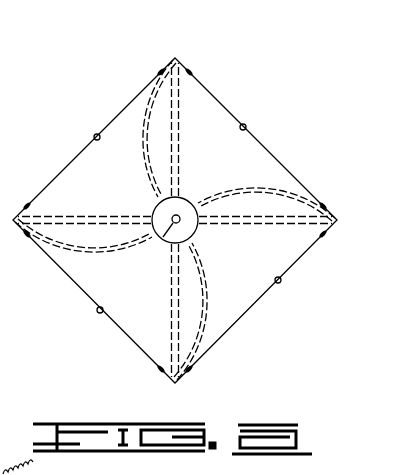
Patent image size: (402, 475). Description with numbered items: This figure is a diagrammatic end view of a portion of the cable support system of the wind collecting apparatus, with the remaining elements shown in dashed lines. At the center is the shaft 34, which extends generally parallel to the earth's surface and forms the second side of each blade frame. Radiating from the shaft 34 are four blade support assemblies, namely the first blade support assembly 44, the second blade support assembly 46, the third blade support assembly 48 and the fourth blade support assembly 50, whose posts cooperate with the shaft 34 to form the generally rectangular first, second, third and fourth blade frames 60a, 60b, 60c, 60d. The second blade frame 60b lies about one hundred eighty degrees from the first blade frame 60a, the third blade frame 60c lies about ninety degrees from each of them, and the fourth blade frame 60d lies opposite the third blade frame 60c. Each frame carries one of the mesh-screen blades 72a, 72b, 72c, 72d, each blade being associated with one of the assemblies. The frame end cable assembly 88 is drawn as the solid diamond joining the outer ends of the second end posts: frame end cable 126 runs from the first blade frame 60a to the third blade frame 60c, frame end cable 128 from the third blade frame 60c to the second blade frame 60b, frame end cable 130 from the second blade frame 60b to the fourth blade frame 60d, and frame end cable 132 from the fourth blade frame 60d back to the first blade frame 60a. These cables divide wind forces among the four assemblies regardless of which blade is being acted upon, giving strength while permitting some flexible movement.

The shaft 34 is at (168, 231).
The first blade support assembly 44 is at (181, 93).
The second blade support assembly 46 is at (168, 338).
The third blade support assembly 48 is at (90, 214).
The fourth blade support assembly 50 is at (271, 229).
The first blade frame 60a is at (180, 128).
The second blade frame 60b is at (152, 312).
The third blade frame 60c is at (78, 230).
The fourth blade frame 60d is at (266, 200).
The blade 72a is at (138, 125).
The blade 72b is at (196, 290).
The blade 72c is at (86, 259).
The blade 72d is at (250, 186).
The frame end cable assembly 88 is at (250, 318).
The frame end cable 126 is at (94, 135).
The frame end cable 128 is at (97, 311).
The frame end cable 130 is at (281, 280).
The frame end cable 132 is at (246, 126).